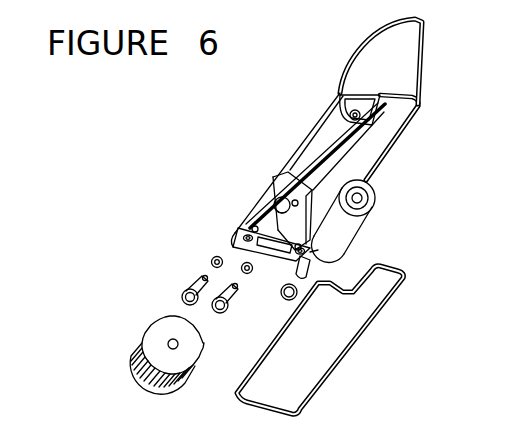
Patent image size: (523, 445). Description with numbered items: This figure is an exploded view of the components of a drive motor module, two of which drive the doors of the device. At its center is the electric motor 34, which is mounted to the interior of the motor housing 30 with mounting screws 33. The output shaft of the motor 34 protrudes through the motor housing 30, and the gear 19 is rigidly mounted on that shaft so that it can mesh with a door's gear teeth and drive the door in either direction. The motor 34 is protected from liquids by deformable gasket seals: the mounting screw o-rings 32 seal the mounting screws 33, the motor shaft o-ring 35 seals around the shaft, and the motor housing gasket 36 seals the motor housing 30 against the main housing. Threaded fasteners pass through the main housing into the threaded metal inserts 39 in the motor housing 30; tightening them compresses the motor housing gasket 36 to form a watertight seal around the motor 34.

The gear 19 is at (158, 328).
The motor housing 30 is at (410, 65).
The mounting screw o-rings 32 is at (244, 264).
The mounting screws 33 is at (233, 284).
The electric motor 34 is at (353, 230).
The motor shaft o-ring 35 is at (293, 300).
The motor housing gasket 36 is at (367, 327).
The threaded metal inserts 39 is at (298, 246).